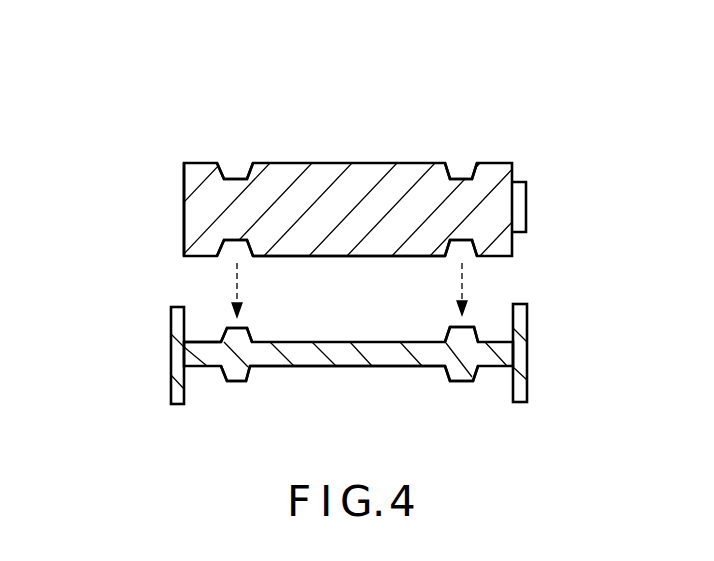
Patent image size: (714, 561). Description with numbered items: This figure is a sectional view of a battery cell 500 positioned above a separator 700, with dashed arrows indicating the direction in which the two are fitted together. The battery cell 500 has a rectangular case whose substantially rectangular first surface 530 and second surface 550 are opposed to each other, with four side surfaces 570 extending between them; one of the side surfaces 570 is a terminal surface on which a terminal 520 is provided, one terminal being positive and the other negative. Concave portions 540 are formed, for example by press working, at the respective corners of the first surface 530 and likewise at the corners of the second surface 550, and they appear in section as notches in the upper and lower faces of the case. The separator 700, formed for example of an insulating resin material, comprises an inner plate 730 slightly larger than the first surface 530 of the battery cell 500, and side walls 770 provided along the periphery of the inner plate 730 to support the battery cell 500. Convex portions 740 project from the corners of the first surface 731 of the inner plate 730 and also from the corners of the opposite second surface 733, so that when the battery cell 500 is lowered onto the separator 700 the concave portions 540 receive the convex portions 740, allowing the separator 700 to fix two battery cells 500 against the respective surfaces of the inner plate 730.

The battery cell 500 is at (354, 170).
The terminal 520 is at (527, 206).
The first surface 530 is at (372, 163).
The concave portion 540 is at (233, 178).
The second surface 550 is at (380, 256).
The side surface 570 is at (184, 210).
The separator 700 is at (285, 355).
The inner plate 730 is at (207, 342).
The first surface of the inner plate 731 is at (336, 342).
The second surface of the inner plate 733 is at (357, 367).
The convex portion 740 is at (251, 340).
The side wall 770 is at (171, 357).